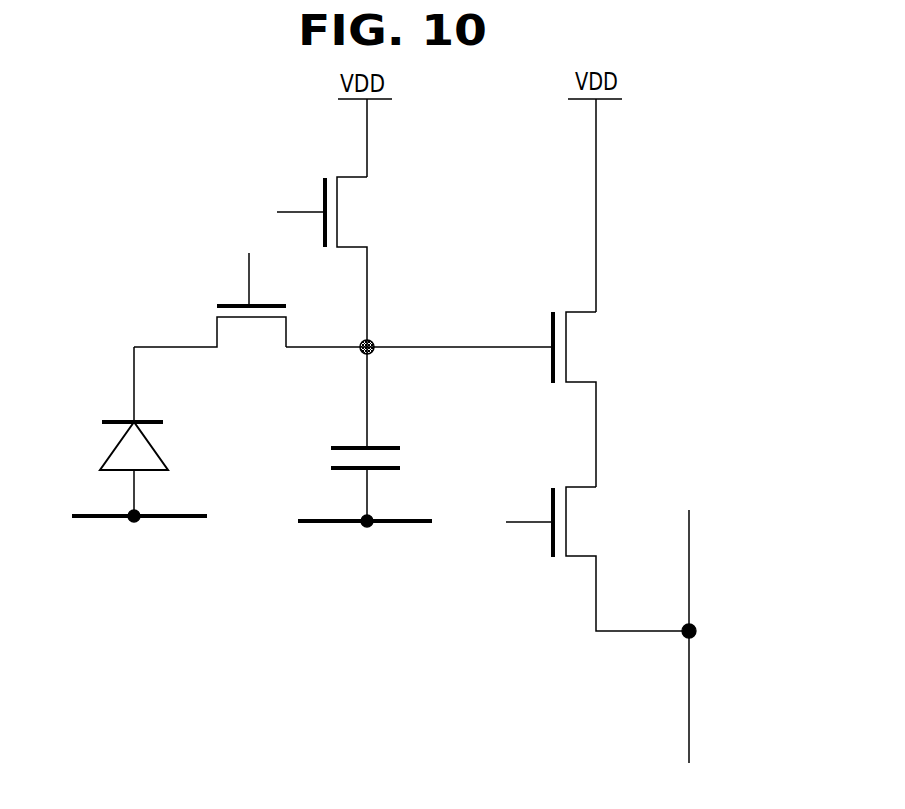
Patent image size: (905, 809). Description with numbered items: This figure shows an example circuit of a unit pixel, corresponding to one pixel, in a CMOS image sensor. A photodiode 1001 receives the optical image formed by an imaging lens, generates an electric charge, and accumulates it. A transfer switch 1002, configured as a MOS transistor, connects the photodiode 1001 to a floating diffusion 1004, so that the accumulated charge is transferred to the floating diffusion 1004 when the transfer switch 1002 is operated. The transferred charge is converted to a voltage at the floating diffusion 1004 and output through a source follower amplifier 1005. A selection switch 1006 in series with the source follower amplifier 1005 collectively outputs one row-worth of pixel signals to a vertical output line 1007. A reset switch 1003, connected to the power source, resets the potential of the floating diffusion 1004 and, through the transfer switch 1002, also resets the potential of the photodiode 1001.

The photodiode 1001 is at (105, 460).
The transfer switch 1002 is at (233, 300).
The reset switch 1003 is at (330, 173).
The floating diffusion 1004 is at (398, 458).
The source follower amplifier 1005 is at (577, 305).
The selection switch 1006 is at (550, 537).
The vertical output line 1007 is at (689, 560).